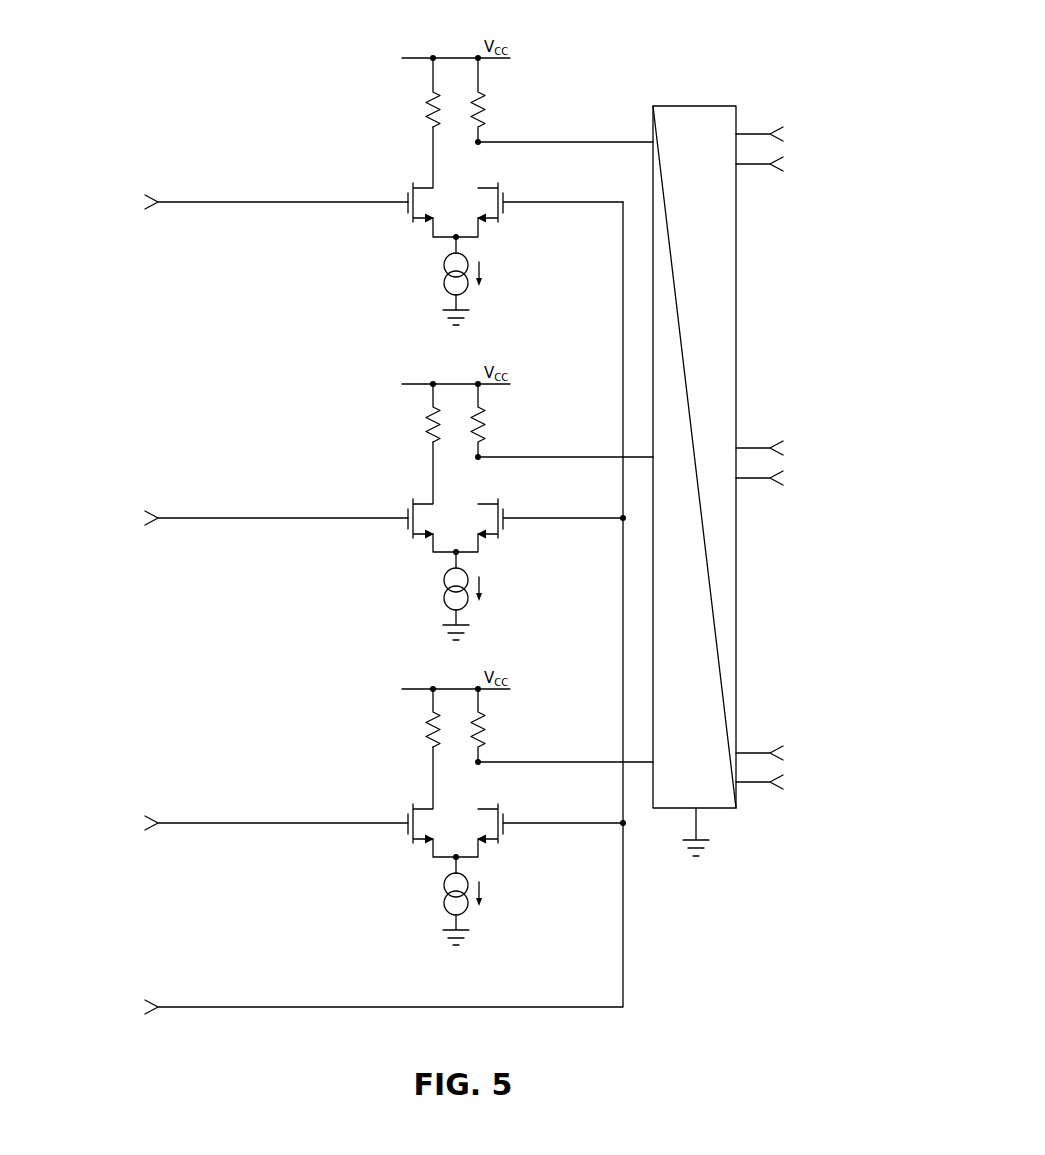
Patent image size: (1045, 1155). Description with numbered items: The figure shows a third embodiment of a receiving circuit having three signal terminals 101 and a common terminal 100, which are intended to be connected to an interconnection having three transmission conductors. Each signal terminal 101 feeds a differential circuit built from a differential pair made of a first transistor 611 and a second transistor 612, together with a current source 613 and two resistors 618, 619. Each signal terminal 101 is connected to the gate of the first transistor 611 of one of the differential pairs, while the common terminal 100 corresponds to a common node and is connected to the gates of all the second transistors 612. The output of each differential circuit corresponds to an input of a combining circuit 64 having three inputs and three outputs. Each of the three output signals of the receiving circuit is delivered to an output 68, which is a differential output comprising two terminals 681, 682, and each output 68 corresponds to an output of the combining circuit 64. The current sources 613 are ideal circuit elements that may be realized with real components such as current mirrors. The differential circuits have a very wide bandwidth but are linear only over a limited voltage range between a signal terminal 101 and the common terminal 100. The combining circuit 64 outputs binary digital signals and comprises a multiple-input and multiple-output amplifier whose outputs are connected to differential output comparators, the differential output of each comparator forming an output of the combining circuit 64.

The common terminal 100 is at (135, 1005).
The signal terminal 101 is at (137, 201).
The first transistor 611 is at (396, 183).
The second transistor 612 is at (520, 212).
The current source 613 is at (497, 286).
The resistor 618 is at (418, 110).
The resistor 619 is at (496, 107).
The combining circuit 64 is at (697, 78).
The output 68 is at (792, 424).
The terminal 681 is at (793, 131).
The terminal 682 is at (793, 162).